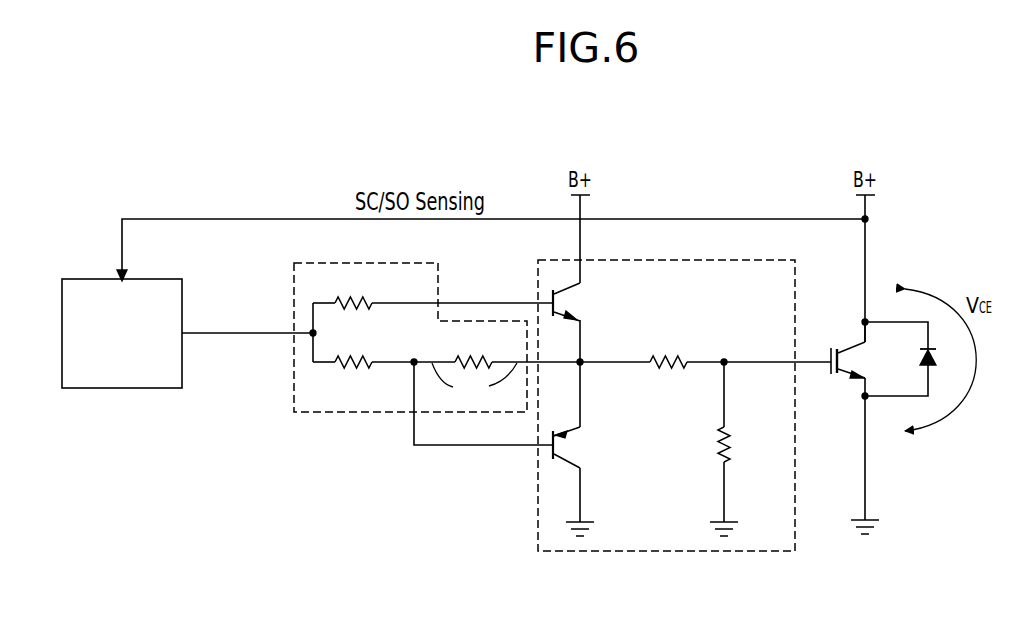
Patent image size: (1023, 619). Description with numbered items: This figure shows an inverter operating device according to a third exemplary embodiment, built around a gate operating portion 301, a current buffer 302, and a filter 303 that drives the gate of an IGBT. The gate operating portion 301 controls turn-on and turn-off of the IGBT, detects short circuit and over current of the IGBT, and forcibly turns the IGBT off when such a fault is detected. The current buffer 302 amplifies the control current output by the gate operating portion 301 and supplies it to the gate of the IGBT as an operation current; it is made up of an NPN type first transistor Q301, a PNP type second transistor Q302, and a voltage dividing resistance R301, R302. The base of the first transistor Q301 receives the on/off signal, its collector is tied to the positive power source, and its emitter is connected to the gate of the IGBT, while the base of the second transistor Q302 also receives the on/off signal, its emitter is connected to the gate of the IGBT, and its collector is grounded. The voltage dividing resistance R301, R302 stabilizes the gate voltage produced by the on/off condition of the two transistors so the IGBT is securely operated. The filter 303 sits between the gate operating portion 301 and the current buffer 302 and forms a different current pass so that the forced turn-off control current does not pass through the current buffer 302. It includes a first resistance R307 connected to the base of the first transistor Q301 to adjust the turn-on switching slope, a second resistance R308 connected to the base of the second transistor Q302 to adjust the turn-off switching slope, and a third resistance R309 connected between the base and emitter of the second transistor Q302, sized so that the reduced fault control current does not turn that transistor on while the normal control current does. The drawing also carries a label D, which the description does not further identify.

The gate operating portion 301 is at (122, 388).
The current buffer 302 is at (684, 431).
The filter 303 is at (437, 362).
The first resistance R307 is at (433, 289).
The second resistance R308 is at (363, 349).
The third resistance R309 is at (497, 349).
The voltage dividing resistance R302 is at (652, 348).
The voltage dividing resistance R301 is at (745, 449).
The first transistor Q301 is at (586, 322).
The second transistor Q302 is at (587, 449).
The element IGBT is at (859, 421).
The diode D is at (910, 359).